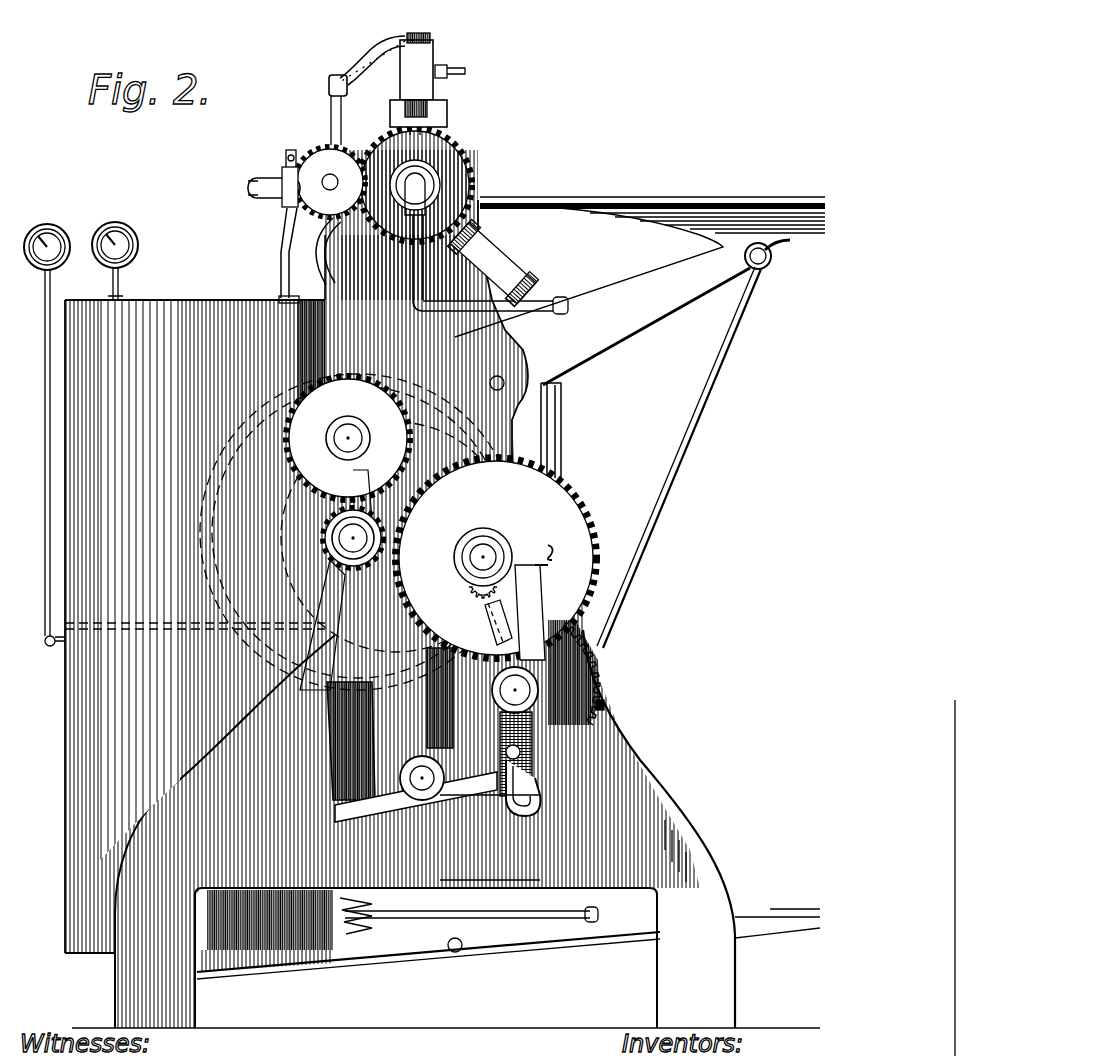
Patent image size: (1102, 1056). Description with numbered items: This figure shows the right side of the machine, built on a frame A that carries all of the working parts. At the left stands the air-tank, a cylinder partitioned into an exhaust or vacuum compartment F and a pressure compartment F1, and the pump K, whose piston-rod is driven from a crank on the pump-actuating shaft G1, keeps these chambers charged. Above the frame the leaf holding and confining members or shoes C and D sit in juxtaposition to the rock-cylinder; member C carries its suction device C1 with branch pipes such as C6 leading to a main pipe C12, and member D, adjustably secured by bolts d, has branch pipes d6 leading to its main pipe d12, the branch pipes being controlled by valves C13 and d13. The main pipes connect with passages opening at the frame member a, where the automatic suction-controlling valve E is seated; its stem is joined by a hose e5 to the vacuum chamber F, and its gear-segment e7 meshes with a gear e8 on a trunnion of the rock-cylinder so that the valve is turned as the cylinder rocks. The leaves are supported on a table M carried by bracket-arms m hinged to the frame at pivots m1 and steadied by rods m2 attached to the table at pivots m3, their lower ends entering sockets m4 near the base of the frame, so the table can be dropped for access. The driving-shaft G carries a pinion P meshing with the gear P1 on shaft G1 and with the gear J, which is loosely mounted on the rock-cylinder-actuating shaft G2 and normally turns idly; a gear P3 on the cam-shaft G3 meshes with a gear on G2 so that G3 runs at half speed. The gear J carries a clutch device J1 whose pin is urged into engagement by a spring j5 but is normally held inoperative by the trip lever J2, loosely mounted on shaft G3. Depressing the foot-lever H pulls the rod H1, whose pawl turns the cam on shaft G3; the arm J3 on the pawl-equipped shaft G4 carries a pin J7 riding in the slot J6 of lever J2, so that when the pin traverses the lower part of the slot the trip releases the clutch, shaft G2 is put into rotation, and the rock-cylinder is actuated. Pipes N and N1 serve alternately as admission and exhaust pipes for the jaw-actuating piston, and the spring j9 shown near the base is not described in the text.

The frame A is at (708, 815).
The frame member a is at (657, 851).
The pump K is at (330, 748).
The pipe N is at (405, 303).
The pipe N1 is at (562, 425).
The exhaust compartment of air-tank F is at (195, 626).
The pressure compartment of air-tank F1 is at (195, 788).
The table M is at (652, 201).
The bracket-arm m is at (622, 296).
The pivot m1 is at (505, 383).
The rod m2 is at (688, 475).
The pivot m3 is at (760, 268).
The socket m4 is at (604, 706).
The bolts d is at (490, 264).
The branch pipe d6 is at (322, 265).
The main pipe d12 is at (280, 185).
The valve d13 is at (289, 150).
The concave or shoe D is at (495, 243).
The leaf confining and holding member or retainer C is at (416, 33).
The suction device C1 is at (350, 68).
The branch pipe C6 is at (378, 52).
The main pipe C12 is at (328, 92).
The valve C13 is at (450, 66).
The automatic suction-controlling valve E is at (330, 182).
The pipe or hose e5 is at (286, 237).
The gear-segment e7 is at (340, 198).
The gear e8 is at (453, 163).
The driving-shaft G is at (350, 530).
The pump-actuating shaft G1 is at (348, 434).
The rock-cylinder-actuating shaft G2 is at (482, 555).
The cam-shaft G3 is at (523, 682).
The pawl-equipped shaft G4 is at (420, 790).
The pinion P is at (323, 625).
The gear P1 is at (375, 480).
The gear P3 is at (453, 723).
The gear J is at (508, 528).
The clutch device J1 is at (502, 620).
The rock-lever or trip member J2 is at (536, 600).
The arm J3 is at (463, 790).
The slot J6 is at (541, 805).
The pin J7 is at (521, 752).
The spring j5 is at (478, 599).
The spring j9 is at (422, 925).
The foot-lever H is at (520, 945).
The rod H1 is at (460, 902).